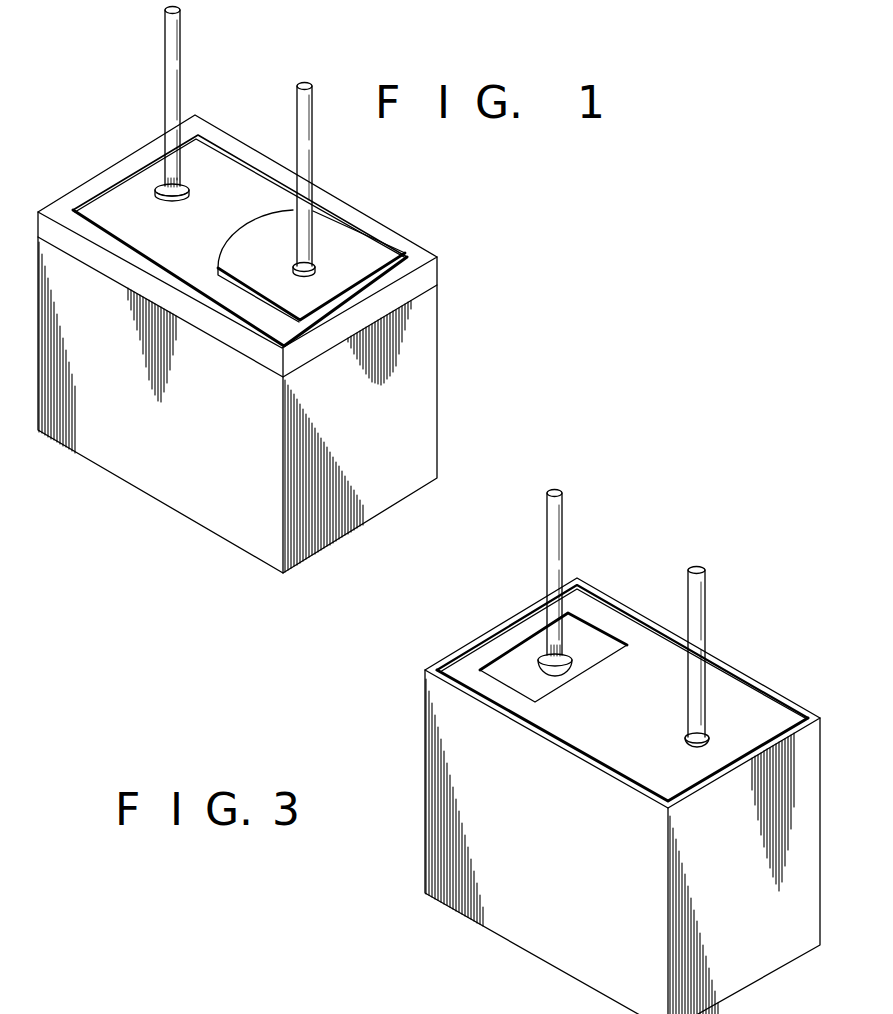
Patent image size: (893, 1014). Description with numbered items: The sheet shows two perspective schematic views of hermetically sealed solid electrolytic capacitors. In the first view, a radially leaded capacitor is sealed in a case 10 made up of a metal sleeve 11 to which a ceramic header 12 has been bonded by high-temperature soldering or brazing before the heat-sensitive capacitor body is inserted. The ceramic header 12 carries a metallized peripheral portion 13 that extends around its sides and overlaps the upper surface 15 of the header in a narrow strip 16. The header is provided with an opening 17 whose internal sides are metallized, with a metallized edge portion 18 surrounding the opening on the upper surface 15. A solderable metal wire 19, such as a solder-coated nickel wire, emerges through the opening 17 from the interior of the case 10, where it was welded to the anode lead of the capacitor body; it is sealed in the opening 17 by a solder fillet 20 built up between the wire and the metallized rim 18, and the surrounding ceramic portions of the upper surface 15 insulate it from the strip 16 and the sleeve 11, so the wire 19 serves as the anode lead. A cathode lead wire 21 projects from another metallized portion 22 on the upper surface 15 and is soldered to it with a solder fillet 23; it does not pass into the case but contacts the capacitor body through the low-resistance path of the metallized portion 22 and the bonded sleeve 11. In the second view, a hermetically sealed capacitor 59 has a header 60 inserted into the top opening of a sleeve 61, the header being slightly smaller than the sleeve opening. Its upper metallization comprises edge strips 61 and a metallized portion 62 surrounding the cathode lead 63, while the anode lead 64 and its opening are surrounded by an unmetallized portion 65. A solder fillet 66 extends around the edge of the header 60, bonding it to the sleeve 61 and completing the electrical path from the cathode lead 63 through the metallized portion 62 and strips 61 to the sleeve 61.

In FIG. 1, the case 10 is at (412, 234).
In FIG. 1, the metal sleeve 11 is at (433, 377).
In FIG. 1, the ceramic header 12 is at (362, 242).
In FIG. 1, the metallized peripheral portion 13 is at (438, 272).
In FIG. 1, the upper surface 15 is at (218, 226).
In FIG. 1, the narrow strip 16 is at (232, 140).
In FIG. 1, the opening 17 is at (181, 186).
In FIG. 1, the metallized edge portion 18 is at (157, 193).
In FIG. 1, the solderable metal wire 19 is at (175, 24).
In FIG. 1, the solder fillet 20 is at (185, 188).
In FIG. 1, the cathode lead wire 21 is at (312, 106).
In FIG. 1, the metallized portion 22 is at (350, 291).
In FIG. 1, the solder fillet 23 is at (296, 264).
In FIG. 3, the hermetically sealed capacitor 59 is at (595, 585).
In FIG. 3, the header 60 is at (753, 710).
In FIG. 3, the sleeve 61 is at (427, 667).
In FIG. 3, the metallized portion 62 is at (645, 743).
In FIG. 3, the cathode lead 63 is at (704, 588).
In FIG. 3, the anode lead 64 is at (555, 518).
In FIG. 3, the unmetallized portion 65 is at (540, 678).
In FIG. 3, the solder fillet 66 is at (643, 623).